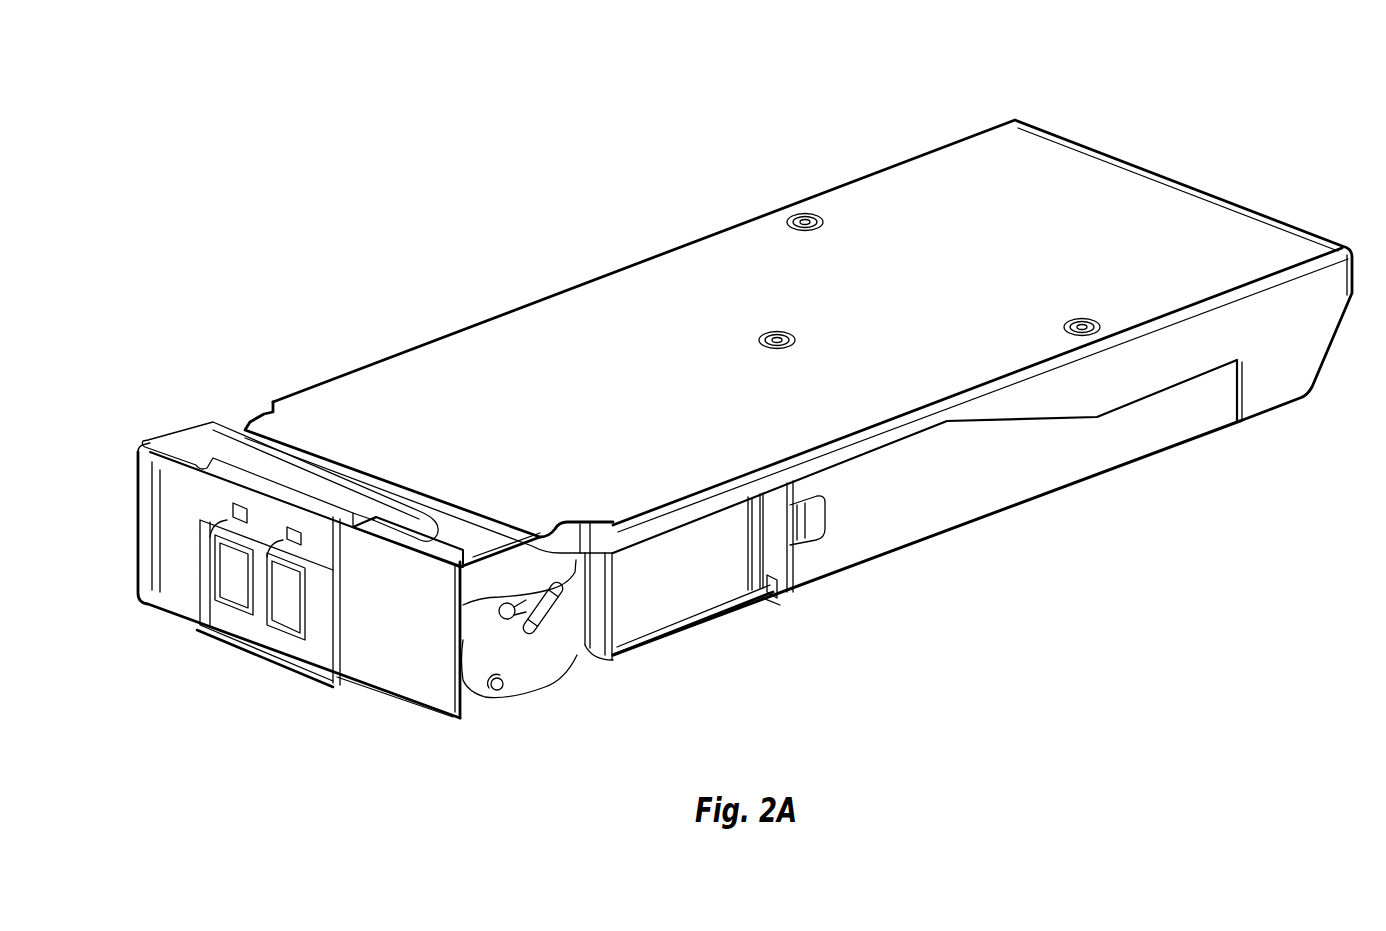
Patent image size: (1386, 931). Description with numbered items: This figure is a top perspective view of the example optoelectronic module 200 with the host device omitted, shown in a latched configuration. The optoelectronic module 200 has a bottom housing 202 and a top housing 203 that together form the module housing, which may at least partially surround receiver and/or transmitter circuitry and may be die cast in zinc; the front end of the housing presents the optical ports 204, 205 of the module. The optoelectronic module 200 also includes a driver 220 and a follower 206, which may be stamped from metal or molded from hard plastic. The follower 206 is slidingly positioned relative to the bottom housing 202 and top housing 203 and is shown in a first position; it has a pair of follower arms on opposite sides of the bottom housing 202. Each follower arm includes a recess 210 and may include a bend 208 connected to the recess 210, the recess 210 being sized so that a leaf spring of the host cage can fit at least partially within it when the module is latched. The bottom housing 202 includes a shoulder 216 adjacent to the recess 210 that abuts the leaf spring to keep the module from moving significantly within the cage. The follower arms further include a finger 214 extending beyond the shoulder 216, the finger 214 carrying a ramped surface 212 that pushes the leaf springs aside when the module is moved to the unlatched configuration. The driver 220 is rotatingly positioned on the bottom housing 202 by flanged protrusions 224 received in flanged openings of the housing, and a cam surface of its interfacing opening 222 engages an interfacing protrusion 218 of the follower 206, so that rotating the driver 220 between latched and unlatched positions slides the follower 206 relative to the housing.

The optoelectronic module 200 is at (316, 120).
The bottom housing 202 is at (1058, 471).
The top housing 203 is at (1058, 254).
The transmit (TX) optical port 204 is at (237, 575).
The receive (RX) optical port 205 is at (293, 598).
The follower 206 is at (700, 583).
The bend 208 is at (773, 586).
The recess 210 is at (775, 556).
The ramped surface 212 is at (798, 530).
The finger 214 is at (823, 517).
The shoulder 216 is at (778, 596).
The interfacing protrusion 218 is at (487, 602).
The driver 220 is at (547, 657).
The interfacing opening 222 is at (556, 606).
The flanged protrusion 224 is at (503, 685).